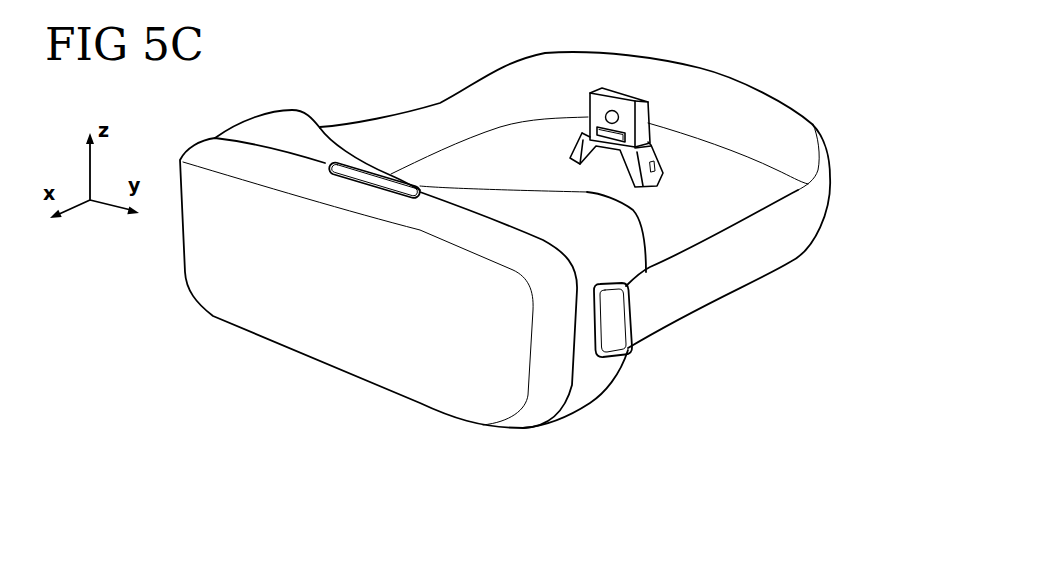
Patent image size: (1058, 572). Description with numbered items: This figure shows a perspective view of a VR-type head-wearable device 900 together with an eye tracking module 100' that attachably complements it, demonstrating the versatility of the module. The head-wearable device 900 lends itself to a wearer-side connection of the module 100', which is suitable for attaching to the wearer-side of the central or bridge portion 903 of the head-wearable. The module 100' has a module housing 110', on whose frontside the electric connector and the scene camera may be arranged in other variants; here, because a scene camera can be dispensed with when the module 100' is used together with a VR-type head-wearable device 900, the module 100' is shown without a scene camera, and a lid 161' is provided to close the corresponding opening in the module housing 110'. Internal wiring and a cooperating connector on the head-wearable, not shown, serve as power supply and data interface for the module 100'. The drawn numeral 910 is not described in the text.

The VR-type head-wearable device 900 is at (770, 322).
The headset body 910 is at (642, 375).
The central or bridge portion 903 is at (384, 152).
The eye tracking module 100' is at (627, 93).
The module housing 110' is at (677, 117).
The lid 161' is at (554, 97).